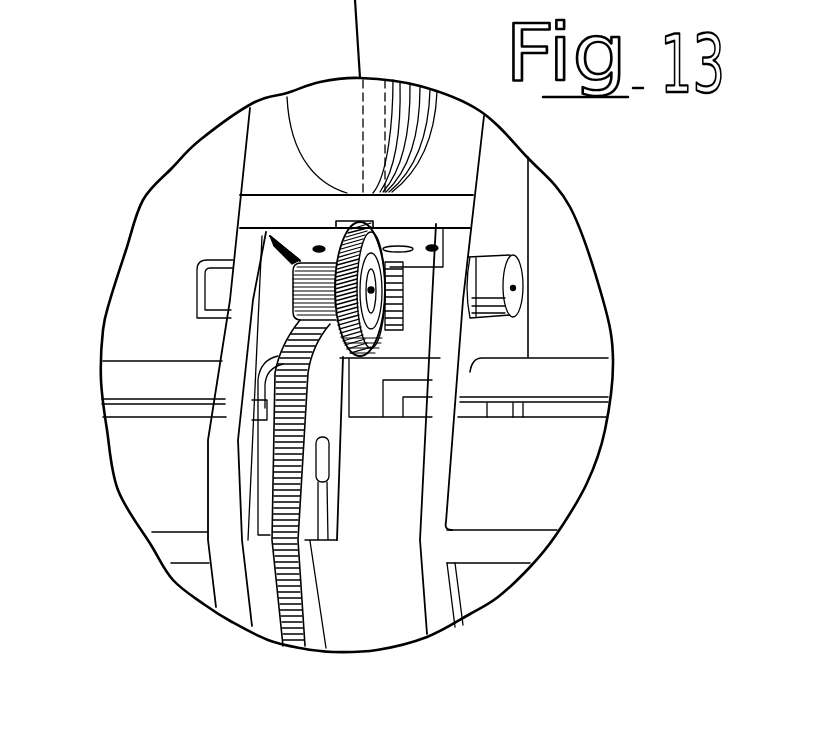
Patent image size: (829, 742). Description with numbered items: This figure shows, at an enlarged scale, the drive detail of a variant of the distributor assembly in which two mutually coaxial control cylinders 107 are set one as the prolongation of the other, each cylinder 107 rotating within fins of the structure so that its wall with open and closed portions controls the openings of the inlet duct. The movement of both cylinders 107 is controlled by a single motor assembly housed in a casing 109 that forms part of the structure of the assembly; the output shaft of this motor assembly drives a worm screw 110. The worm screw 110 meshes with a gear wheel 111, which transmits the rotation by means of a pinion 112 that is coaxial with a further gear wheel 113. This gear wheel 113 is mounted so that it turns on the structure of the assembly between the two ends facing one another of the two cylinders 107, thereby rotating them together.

The rotating cylinder 107 is at (143, 465).
The casing 109 is at (390, 100).
The worm screw 110 is at (398, 288).
The gear wheel 111 is at (385, 360).
The pinion 112 is at (297, 257).
The gear wheel 113 is at (292, 346).